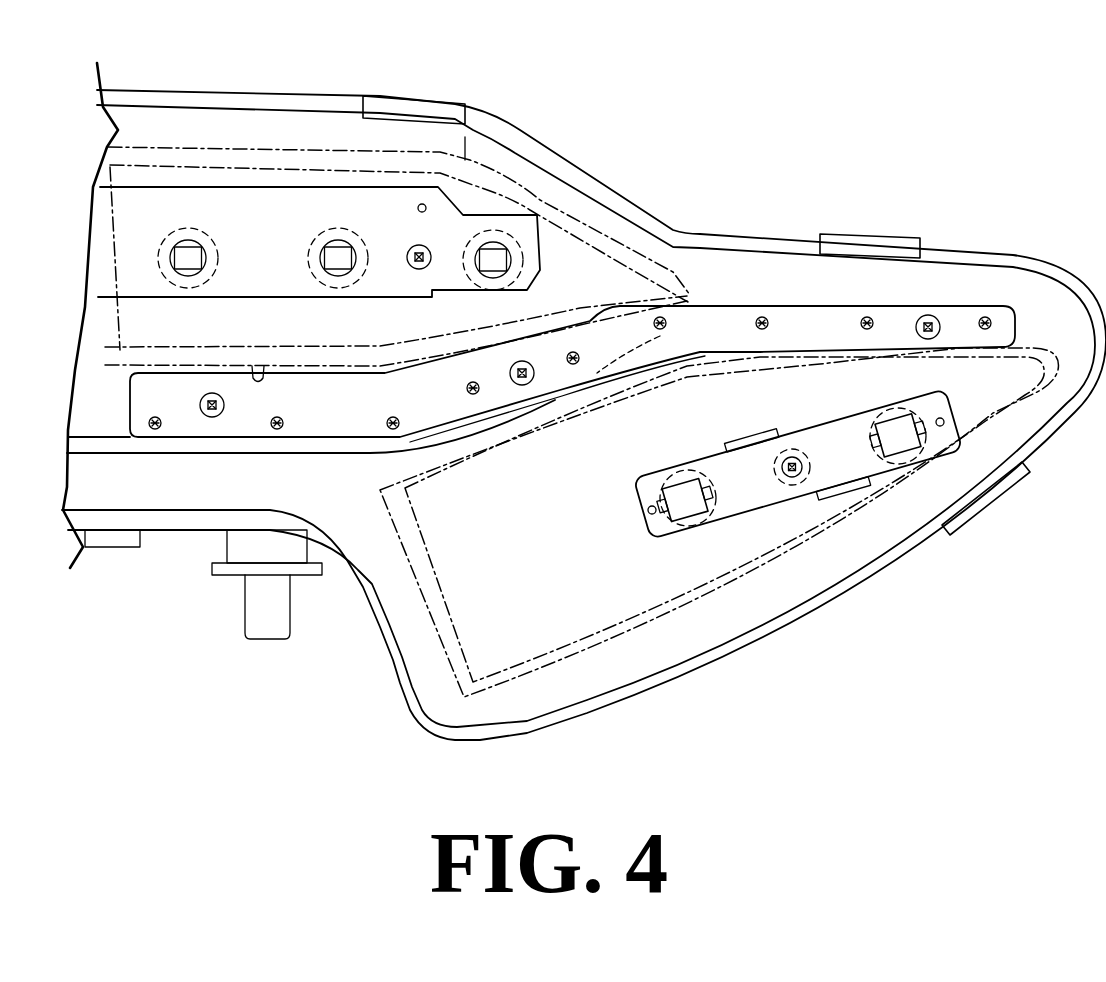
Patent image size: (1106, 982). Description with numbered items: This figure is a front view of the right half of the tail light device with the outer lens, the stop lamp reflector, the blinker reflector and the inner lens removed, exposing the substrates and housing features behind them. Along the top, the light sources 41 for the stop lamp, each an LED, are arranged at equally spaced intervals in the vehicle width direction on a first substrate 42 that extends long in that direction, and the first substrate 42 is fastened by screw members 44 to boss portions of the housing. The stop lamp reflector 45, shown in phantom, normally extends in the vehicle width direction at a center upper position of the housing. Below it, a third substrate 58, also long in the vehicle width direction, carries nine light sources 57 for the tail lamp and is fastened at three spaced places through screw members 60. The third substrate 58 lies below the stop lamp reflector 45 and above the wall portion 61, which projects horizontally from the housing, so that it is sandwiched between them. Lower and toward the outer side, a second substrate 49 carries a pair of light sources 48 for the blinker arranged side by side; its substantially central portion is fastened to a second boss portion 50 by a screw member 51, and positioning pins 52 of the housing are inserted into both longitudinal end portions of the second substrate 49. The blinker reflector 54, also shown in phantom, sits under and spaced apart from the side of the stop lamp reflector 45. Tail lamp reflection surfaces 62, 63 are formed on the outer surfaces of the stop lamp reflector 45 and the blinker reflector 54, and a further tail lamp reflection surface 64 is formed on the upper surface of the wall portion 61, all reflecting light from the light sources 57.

The light source for the stop lamp 41 is at (185, 250).
The first substrate 42 is at (302, 200).
The screw member 44 is at (417, 262).
The stop lamp reflector 45 is at (478, 115).
The light source for the blinker 48 is at (687, 493).
The second substrate 49 is at (755, 452).
The second boss portion 50 is at (808, 466).
The screw member 51 is at (784, 476).
The positioning pin 52 is at (648, 511).
The blinker reflector 54 is at (700, 603).
The light source for the tail lamp 57 is at (162, 426).
The third substrate 58 is at (848, 327).
The screw member 60 is at (213, 393).
The wall portion 61 is at (172, 447).
The tail lamp reflection surface 62 is at (258, 366).
The tail lamp reflection surface 63 is at (660, 336).
The tail lamp reflection surface 64 is at (313, 426).